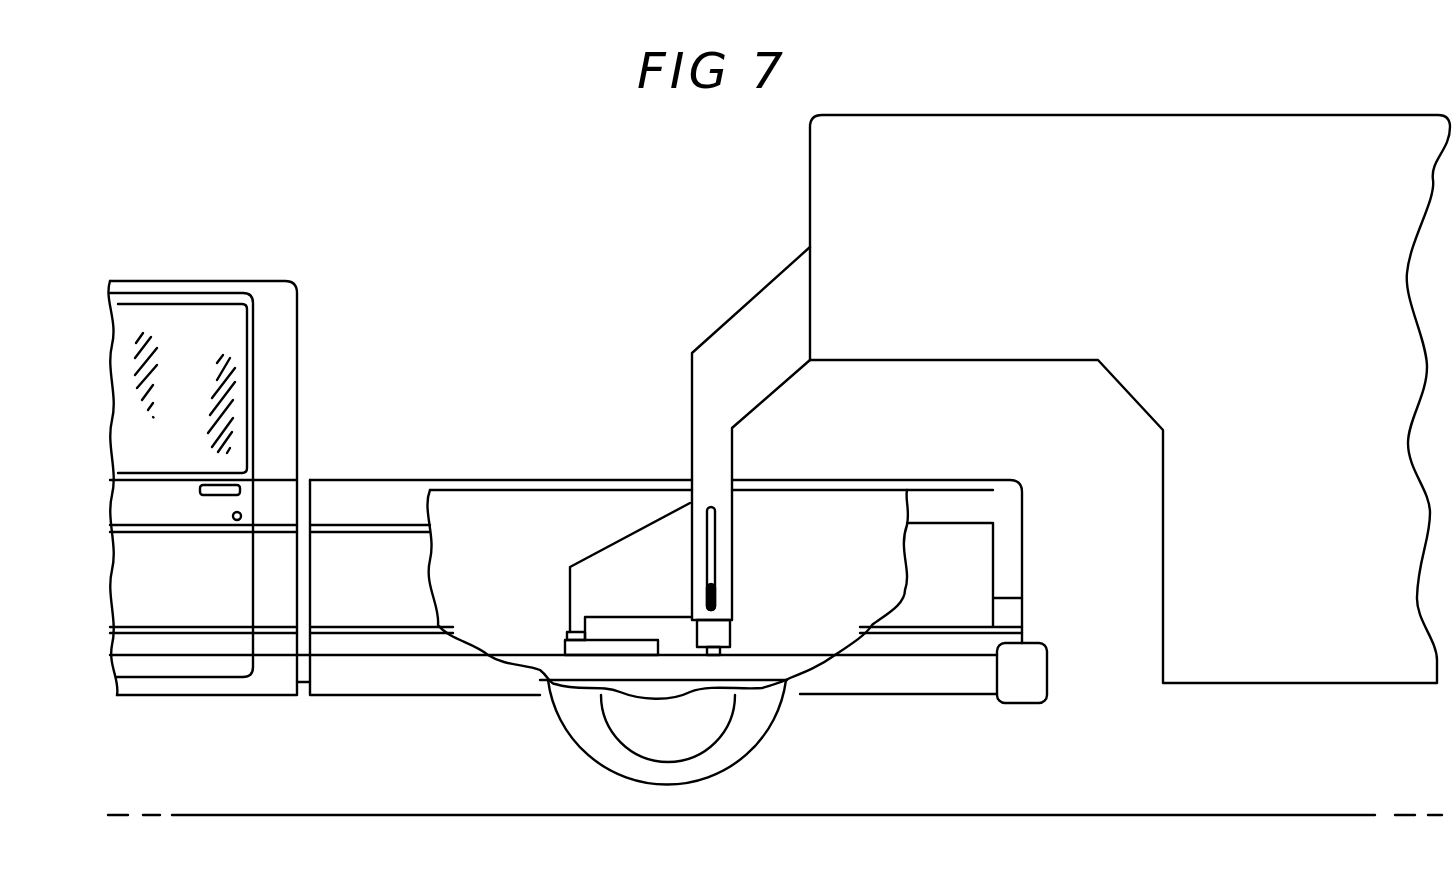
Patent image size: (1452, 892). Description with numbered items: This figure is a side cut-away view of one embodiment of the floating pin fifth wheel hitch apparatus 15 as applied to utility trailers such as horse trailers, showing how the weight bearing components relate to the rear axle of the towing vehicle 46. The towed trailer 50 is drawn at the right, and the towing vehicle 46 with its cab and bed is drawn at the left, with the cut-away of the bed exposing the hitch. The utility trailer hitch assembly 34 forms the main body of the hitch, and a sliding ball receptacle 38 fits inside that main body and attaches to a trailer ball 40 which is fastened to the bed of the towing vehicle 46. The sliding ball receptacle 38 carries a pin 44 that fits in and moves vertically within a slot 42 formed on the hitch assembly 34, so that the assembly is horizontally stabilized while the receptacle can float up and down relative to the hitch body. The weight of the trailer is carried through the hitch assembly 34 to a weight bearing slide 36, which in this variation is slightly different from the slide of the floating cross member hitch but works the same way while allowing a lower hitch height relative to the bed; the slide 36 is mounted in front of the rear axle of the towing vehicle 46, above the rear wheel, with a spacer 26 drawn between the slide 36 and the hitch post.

The floating pin fifth wheel hitch apparatus 15 is at (708, 462).
The spacer block 26 is at (563, 627).
The utility trailer hitch assembly 34 is at (648, 575).
The weight bearing slide 36 is at (563, 642).
The sliding ball receptacle 38 is at (717, 643).
The trailer ball 40 is at (720, 650).
The slot 42 is at (710, 542).
The pin 44 is at (720, 582).
The towing vehicle 46 is at (253, 277).
The trailer body 50 is at (962, 195).